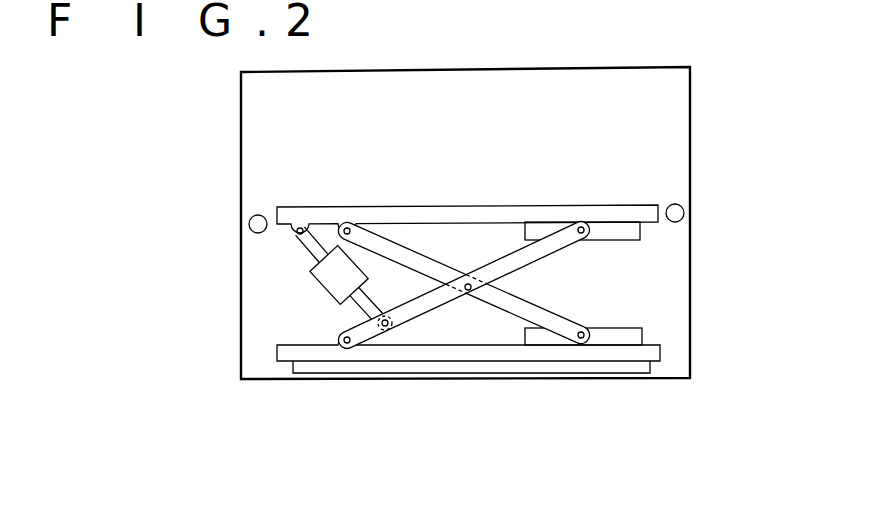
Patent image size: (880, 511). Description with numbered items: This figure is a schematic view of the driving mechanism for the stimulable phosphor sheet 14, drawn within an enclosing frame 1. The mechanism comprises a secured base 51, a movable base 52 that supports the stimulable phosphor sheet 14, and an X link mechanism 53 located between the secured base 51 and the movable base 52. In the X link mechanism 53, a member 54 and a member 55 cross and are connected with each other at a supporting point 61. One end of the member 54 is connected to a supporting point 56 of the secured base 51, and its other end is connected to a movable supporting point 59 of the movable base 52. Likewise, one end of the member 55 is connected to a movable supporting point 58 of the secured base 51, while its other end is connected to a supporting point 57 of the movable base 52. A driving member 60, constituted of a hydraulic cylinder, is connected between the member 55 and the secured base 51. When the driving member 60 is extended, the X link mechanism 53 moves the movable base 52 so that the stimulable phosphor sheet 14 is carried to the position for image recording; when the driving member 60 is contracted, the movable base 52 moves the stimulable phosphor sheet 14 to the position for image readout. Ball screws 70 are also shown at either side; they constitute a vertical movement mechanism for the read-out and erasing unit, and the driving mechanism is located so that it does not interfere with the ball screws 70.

The housing 1 is at (690, 87).
The stimulable phosphor sheet 14 is at (632, 374).
The secured base 51 is at (638, 205).
The movable base 52 is at (661, 352).
The X link mechanism 53 is at (478, 297).
The member 54 is at (435, 259).
The member 55 is at (527, 266).
The supporting point 56 is at (348, 226).
The supporting point 57 is at (348, 346).
The movable supporting point 58 is at (583, 222).
The movable supporting point 59 is at (590, 323).
The driving member 60 is at (338, 285).
The supporting point 61 is at (468, 292).
The ball screw 70 is at (249, 221).